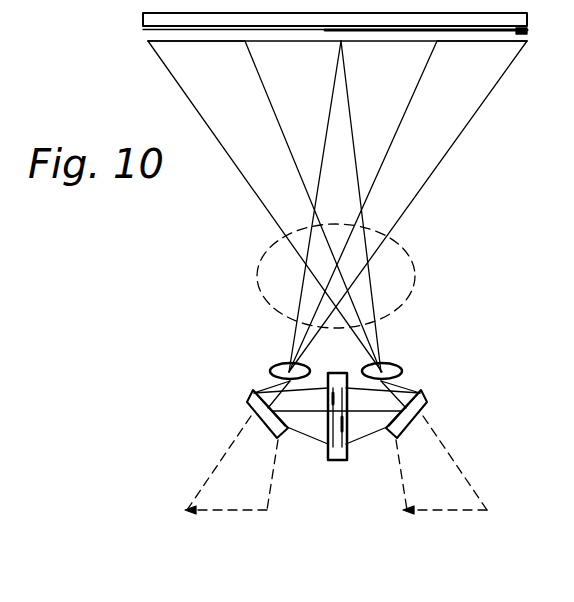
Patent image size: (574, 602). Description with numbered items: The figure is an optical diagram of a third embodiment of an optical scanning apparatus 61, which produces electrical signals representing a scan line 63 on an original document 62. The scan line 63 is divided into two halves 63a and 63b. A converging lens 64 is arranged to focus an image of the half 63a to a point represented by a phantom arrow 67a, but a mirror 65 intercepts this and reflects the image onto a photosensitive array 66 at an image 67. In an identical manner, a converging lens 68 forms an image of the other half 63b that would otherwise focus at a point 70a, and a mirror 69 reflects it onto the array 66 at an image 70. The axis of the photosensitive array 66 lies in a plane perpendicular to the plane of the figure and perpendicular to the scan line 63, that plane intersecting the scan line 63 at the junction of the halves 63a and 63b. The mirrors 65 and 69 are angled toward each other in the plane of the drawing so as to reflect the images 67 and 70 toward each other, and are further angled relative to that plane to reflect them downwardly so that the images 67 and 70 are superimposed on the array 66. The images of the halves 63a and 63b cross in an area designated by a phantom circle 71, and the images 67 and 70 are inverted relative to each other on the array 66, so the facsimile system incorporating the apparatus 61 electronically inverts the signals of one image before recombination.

The optical scanning apparatus 61 is at (183, 265).
The original document 62 is at (148, 18).
The scan line 63 is at (376, 86).
The half of scan line 63a is at (240, 31).
The half of scan line 63b is at (457, 31).
The converging lens 64 is at (403, 368).
The mirror 65 is at (426, 408).
The photosensitive array 66 is at (337, 461).
The image 67 is at (348, 420).
The phantom arrow 67a is at (446, 511).
The converging lens 68 is at (272, 368).
The mirror 69 is at (255, 392).
The image 70 is at (328, 426).
The phantom focus point 70a is at (228, 511).
The phantom circle 71 is at (416, 277).